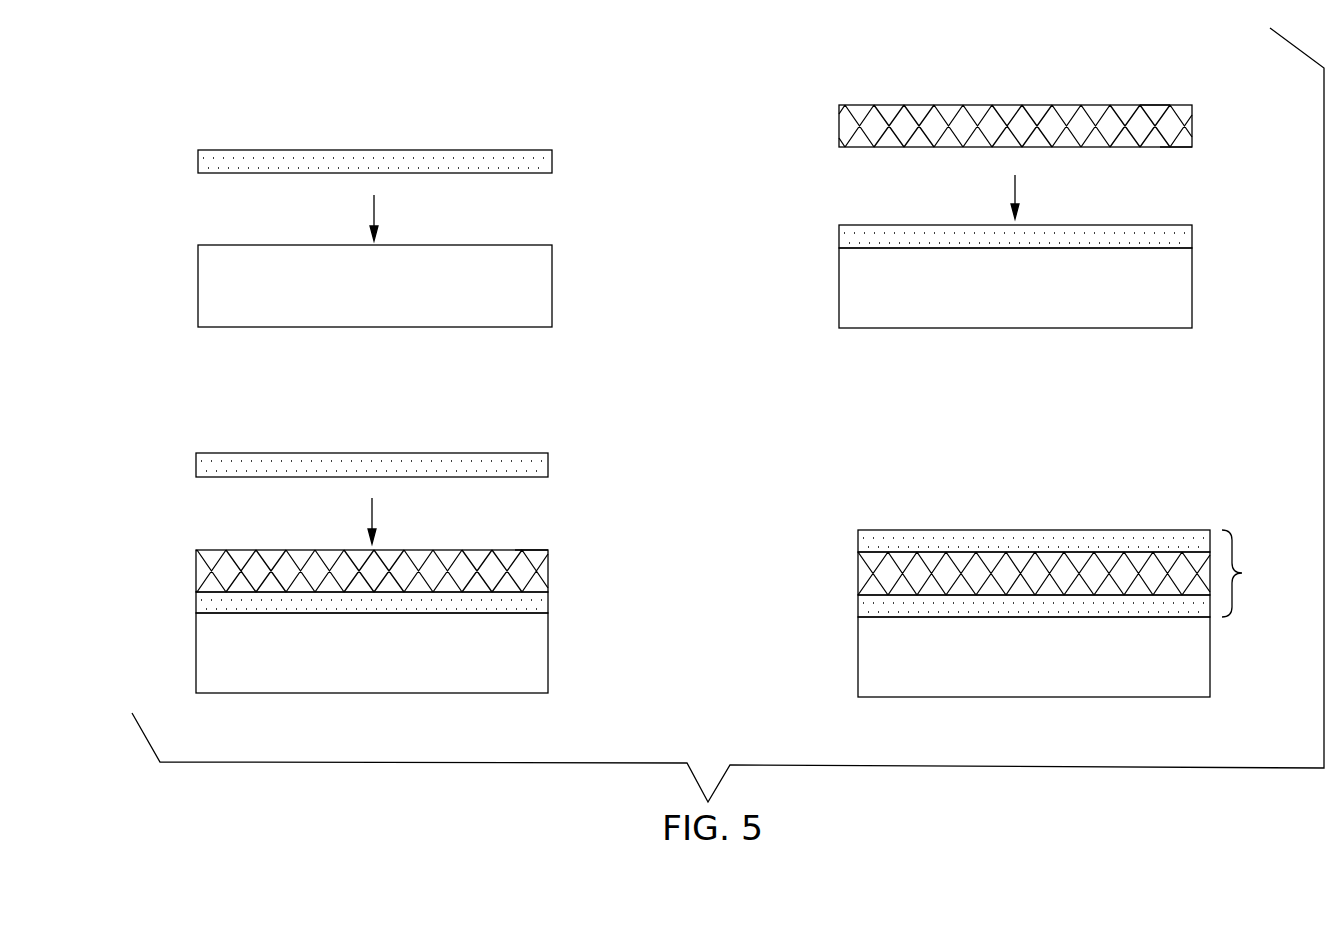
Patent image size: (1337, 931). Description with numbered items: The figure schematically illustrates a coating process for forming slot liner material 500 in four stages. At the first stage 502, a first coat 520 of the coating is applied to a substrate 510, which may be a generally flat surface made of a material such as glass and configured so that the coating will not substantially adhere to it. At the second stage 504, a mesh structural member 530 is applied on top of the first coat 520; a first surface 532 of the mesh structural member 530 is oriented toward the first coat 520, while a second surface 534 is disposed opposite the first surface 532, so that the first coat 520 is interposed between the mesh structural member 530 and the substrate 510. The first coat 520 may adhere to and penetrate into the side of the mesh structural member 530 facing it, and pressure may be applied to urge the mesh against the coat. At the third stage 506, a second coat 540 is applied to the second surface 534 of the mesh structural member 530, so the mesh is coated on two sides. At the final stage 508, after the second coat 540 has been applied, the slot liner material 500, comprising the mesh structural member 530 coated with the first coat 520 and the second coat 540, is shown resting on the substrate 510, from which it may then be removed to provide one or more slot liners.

The slot liner material 500 is at (1246, 573).
The application of first coat 502 is at (350, 365).
The application of mesh structural member 504 is at (992, 367).
The application of second coat 506 is at (348, 730).
The slot liner material shown on substrate 508 is at (1010, 735).
The substrate 510 is at (552, 284).
The first coat 520 is at (552, 160).
The mesh structural member 530 is at (1192, 125).
The first surface of mesh structural member 532 is at (1172, 147).
The second surface of mesh structural member 534 is at (1152, 105).
The second coat 540 is at (500, 452).